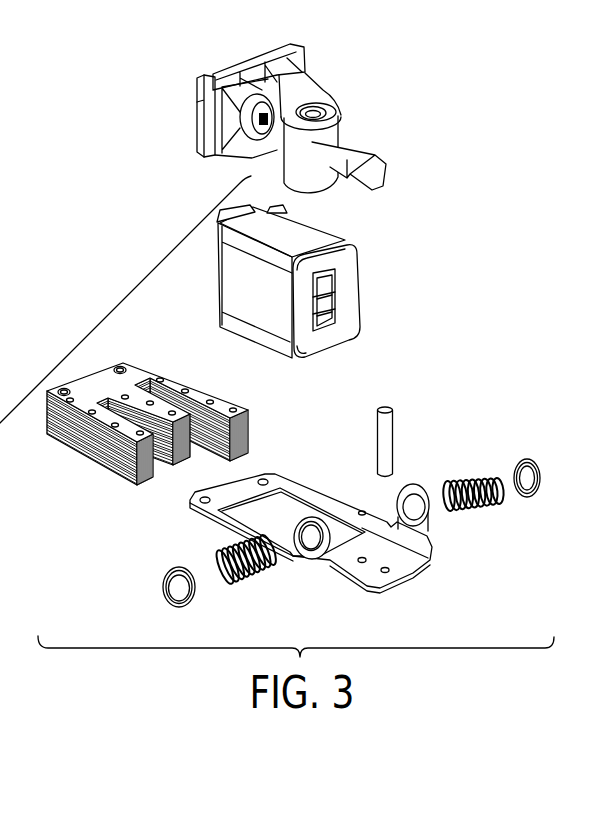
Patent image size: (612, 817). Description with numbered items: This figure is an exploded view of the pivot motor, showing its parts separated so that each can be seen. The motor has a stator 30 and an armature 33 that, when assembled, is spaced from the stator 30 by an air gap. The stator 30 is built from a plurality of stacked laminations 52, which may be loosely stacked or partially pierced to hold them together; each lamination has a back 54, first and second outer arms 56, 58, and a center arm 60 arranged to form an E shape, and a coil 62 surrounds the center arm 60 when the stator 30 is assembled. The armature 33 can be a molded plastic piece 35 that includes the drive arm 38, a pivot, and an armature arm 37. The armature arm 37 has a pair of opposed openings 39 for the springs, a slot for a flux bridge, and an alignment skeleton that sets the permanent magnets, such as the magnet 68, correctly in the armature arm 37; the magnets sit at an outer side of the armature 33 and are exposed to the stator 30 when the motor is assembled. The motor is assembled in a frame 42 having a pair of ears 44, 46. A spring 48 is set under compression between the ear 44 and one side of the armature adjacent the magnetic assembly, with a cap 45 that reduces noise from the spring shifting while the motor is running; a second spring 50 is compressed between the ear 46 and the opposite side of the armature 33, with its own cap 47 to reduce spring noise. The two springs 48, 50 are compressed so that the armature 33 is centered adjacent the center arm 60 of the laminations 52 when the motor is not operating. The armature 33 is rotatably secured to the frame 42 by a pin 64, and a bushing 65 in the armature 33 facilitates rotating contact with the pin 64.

The stator 30 is at (125, 299).
The armature 33 is at (280, 117).
The molded plastic piece 35 is at (310, 101).
The armature arm 37 is at (215, 125).
The drive arm 38 is at (371, 154).
The opposed openings 39 is at (223, 159).
The frame 42 is at (325, 517).
The ear 44 is at (320, 570).
The cap 45 is at (151, 592).
The ear 46 is at (425, 471).
The cap 47 is at (534, 445).
The spring 48 is at (223, 542).
The second spring 50 is at (491, 503).
The stacked laminations 52 is at (132, 422).
The back 54 is at (147, 379).
The first outer arm 56 is at (199, 397).
The second outer arm 58 is at (100, 459).
The center arm 60 is at (150, 399).
The coil 62 is at (268, 281).
The pin 64 is at (414, 426).
The bushing 65 is at (366, 99).
The second permanent magnet 68 is at (176, 116).